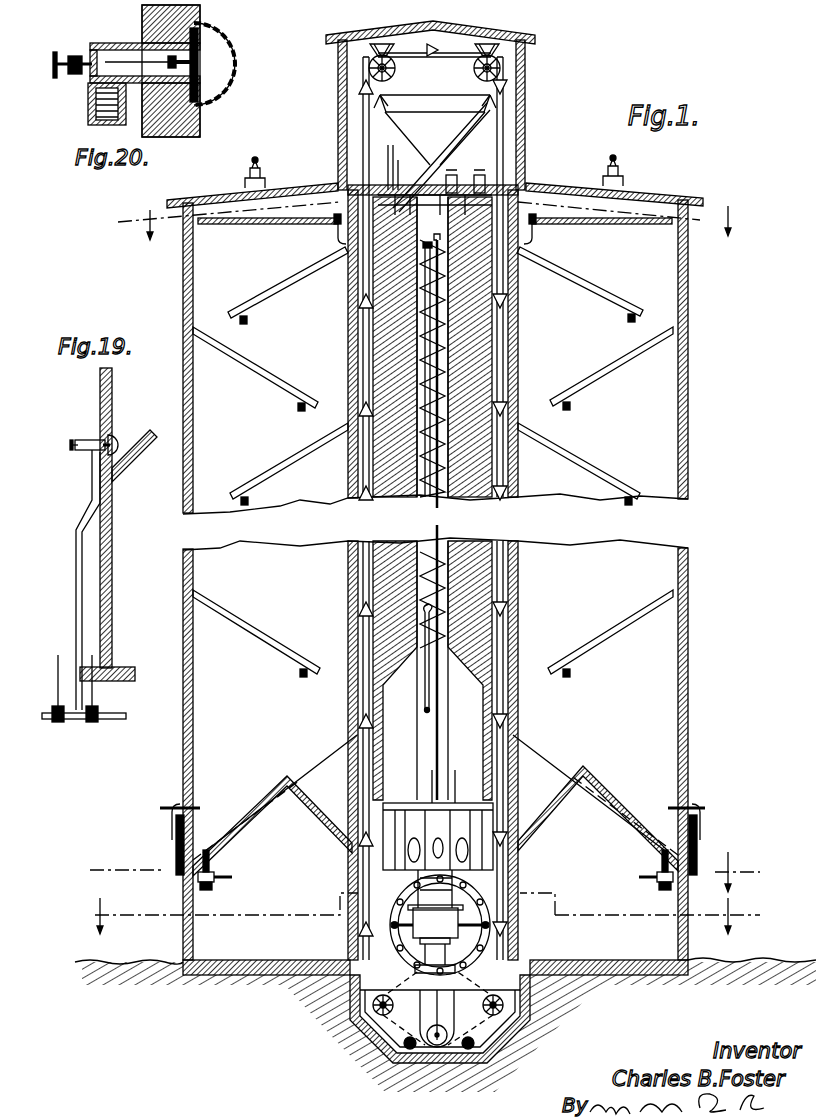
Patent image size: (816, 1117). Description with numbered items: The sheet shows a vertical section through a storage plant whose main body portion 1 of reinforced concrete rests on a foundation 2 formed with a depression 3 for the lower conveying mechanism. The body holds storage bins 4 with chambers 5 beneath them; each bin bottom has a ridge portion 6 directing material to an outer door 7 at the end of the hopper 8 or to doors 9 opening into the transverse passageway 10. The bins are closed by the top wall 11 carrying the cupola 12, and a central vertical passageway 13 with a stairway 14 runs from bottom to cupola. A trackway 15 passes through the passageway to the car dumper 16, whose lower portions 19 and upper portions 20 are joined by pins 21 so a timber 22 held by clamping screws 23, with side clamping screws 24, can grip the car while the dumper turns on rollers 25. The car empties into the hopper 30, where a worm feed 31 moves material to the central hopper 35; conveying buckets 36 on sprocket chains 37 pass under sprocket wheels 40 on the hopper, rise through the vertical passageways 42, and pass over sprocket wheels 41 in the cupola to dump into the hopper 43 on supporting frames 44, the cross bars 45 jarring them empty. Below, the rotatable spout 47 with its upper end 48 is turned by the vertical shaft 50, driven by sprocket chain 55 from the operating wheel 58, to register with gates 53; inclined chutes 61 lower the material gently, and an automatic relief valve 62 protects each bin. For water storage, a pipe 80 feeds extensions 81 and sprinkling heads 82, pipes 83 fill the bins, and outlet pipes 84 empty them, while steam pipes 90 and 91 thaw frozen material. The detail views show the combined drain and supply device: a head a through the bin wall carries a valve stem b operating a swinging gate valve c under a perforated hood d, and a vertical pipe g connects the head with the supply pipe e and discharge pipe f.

In FIG. 20, the main body portion 1 is at (200, 120).
In FIG. 19, the main body portion 1 is at (100, 382).
In FIG. 1, the main body portion 1 is at (183, 298).
In FIG. 19, the foundation 2 is at (105, 681).
In FIG. 1, the foundation 2 is at (630, 1008).
In FIG. 1, the depression 3 is at (583, 1016).
In FIG. 1, the storage bins 4 is at (435, 439).
In FIG. 1, the chambers 5 is at (425, 847).
In FIG. 1, the ridge portion 6 is at (290, 760).
In FIG. 1, the door 7 is at (175, 850).
In FIG. 19, the hopper 8 is at (128, 460).
In FIG. 1, the hopper 8 is at (252, 803).
In FIG. 1, the doors 9 is at (456, 803).
In FIG. 1, the passageway 10 is at (438, 925).
In FIG. 1, the top wall 11 is at (700, 198).
In FIG. 1, the cupola 12 is at (526, 62).
In FIG. 1, the passageway 13 is at (455, 490).
In FIG. 1, the stairway 14 is at (493, 320).
In FIG. 1, the trackway 15 is at (345, 995).
In FIG. 1, the car dumper 16 is at (350, 955).
In FIG. 1, the lower portions 19 is at (500, 955).
In FIG. 1, the upper portions 20 is at (445, 892).
In FIG. 1, the pins or bolts 21 is at (340, 893).
In FIG. 1, the timber 22 is at (435, 921).
In FIG. 1, the clamping screws 23 is at (493, 890).
In FIG. 1, the clamping screws 24 is at (490, 915).
In FIG. 1, the wheels or rollers 25 is at (495, 940).
In FIG. 1, the hopper 30 is at (440, 1017).
In FIG. 1, the right hand worm feed 31 is at (419, 1029).
In FIG. 1, the central hopper 35 is at (400, 1040).
In FIG. 1, the conveying buckets 36 is at (535, 1035).
In FIG. 1, the sprocket chains 37 is at (348, 130).
In FIG. 1, the sprocket wheels 40 is at (360, 1010).
In FIG. 1, the sprocket wheels 41 is at (369, 66).
In FIG. 1, the vertical passageways 42 is at (507, 300).
In FIG. 1, the hopper 43 is at (435, 103).
In FIG. 1, the supporting frames 44 is at (382, 110).
In FIG. 1, the cross bars 45 is at (443, 60).
In FIG. 1, the rotatable spout 47 is at (425, 170).
In FIG. 1, the upper end 48 is at (435, 130).
In FIG. 1, the vertical shaft 50 is at (434, 506).
In FIG. 1, the gates 53 is at (452, 175).
In FIG. 1, the sprocket chain 55 is at (432, 800).
In FIG. 1, the operating wheel 58 is at (520, 893).
In FIG. 1, the inclined chutes 61 is at (298, 298).
In FIG. 1, the automatic relief valve 62 is at (245, 182).
In FIG. 1, the pipe 80 is at (420, 318).
In FIG. 1, the extensions 81 is at (345, 250).
In FIG. 1, the sprinkling head or pipe 82 is at (243, 225).
In FIG. 1, the pipes 83 is at (426, 690).
In FIG. 1, the outlet pipes 84 is at (212, 888).
In FIG. 1, the steam pipes 90 is at (178, 808).
In FIG. 1, the steam pipe 91 is at (437, 1017).
In FIG. 20, the connection or head a is at (108, 43).
In FIG. 19, the connection or head a is at (92, 440).
In FIG. 20, the valve stem b is at (62, 78).
In FIG. 19, the valve stem b is at (70, 451).
In FIG. 20, the swinging gate valve c is at (200, 64).
In FIG. 19, the swinging gate valve c is at (112, 447).
In FIG. 20, the perforated hood d is at (225, 42).
In FIG. 19, the perforated hood d is at (118, 436).
In FIG. 19, the supply pipe e is at (95, 724).
In FIG. 19, the discharge pipe f is at (60, 724).
In FIG. 20, the vertically extending pipe g is at (96, 112).
In FIG. 19, the vertically extending pipe g is at (78, 522).